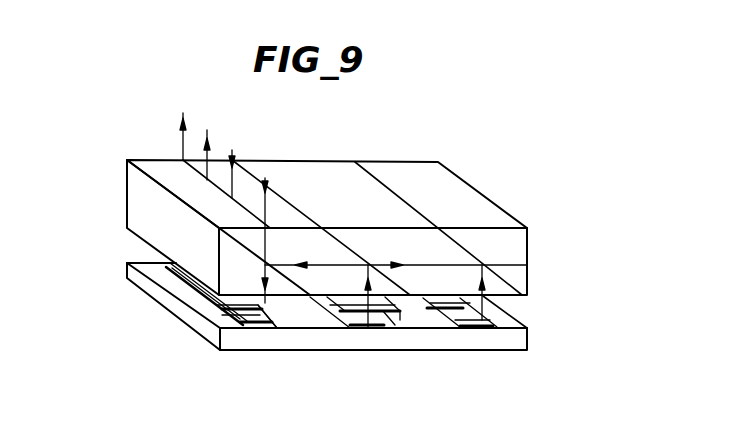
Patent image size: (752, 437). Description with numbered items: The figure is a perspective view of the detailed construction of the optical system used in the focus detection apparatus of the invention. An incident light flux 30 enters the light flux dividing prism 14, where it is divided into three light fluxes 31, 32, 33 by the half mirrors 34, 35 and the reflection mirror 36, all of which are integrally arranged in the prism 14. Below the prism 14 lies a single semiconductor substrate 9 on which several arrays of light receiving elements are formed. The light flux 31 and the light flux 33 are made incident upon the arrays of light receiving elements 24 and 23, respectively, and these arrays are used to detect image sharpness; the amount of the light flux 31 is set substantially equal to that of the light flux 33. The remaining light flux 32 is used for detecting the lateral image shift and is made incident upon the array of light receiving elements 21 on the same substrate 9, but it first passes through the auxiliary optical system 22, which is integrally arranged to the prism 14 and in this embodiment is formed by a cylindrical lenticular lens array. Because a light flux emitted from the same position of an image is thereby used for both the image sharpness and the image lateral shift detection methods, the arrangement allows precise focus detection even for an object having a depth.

The semiconductor substrate 9 is at (532, 351).
The light flux dividing prism 14 is at (528, 247).
The array of light receiving elements 21 is at (356, 320).
The auxiliary optical system 22 is at (400, 313).
The array of light receiving elements 23 is at (488, 328).
The array of light receiving elements 24 is at (266, 304).
The incident light flux 30 is at (267, 212).
The light flux 31 is at (272, 302).
The light flux 32 is at (390, 322).
The light flux 33 is at (512, 308).
The half mirror 34 is at (198, 303).
The half mirror 35 is at (340, 242).
The reflection mirror 36 is at (510, 278).